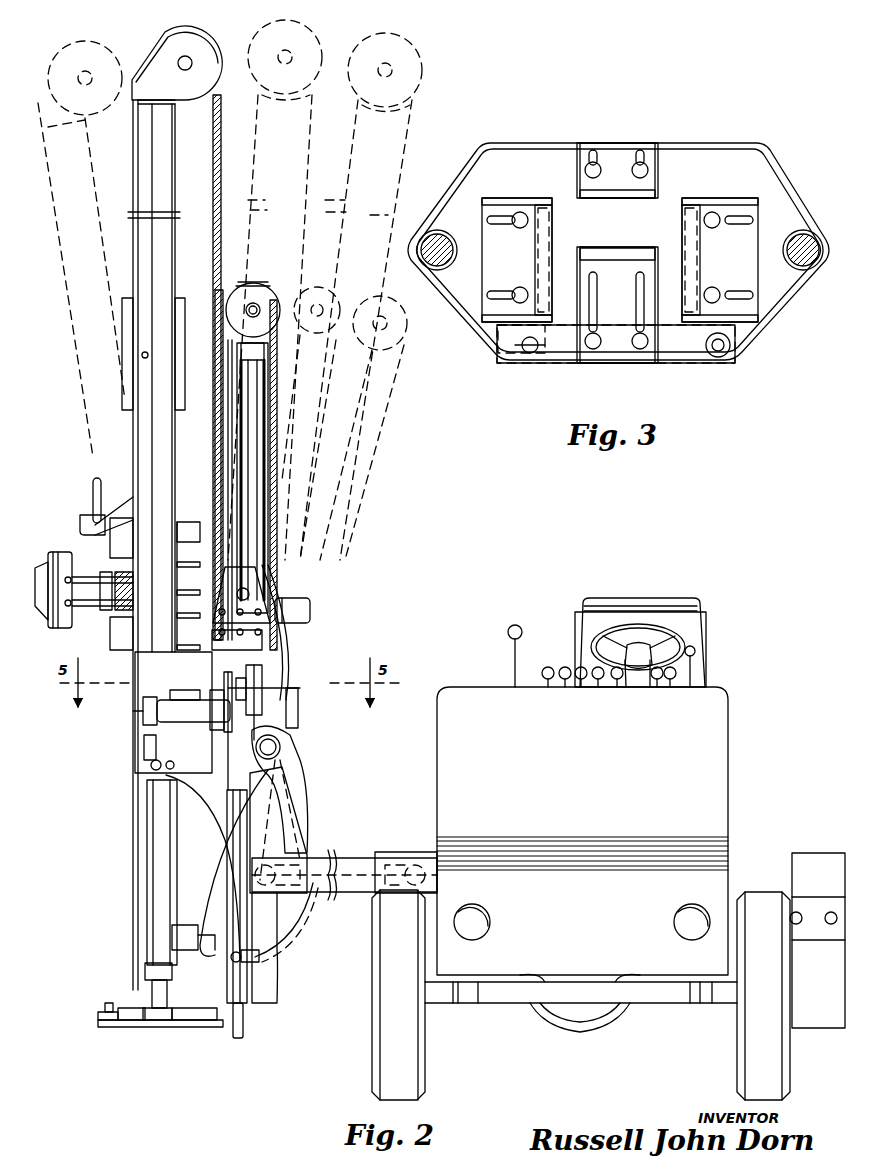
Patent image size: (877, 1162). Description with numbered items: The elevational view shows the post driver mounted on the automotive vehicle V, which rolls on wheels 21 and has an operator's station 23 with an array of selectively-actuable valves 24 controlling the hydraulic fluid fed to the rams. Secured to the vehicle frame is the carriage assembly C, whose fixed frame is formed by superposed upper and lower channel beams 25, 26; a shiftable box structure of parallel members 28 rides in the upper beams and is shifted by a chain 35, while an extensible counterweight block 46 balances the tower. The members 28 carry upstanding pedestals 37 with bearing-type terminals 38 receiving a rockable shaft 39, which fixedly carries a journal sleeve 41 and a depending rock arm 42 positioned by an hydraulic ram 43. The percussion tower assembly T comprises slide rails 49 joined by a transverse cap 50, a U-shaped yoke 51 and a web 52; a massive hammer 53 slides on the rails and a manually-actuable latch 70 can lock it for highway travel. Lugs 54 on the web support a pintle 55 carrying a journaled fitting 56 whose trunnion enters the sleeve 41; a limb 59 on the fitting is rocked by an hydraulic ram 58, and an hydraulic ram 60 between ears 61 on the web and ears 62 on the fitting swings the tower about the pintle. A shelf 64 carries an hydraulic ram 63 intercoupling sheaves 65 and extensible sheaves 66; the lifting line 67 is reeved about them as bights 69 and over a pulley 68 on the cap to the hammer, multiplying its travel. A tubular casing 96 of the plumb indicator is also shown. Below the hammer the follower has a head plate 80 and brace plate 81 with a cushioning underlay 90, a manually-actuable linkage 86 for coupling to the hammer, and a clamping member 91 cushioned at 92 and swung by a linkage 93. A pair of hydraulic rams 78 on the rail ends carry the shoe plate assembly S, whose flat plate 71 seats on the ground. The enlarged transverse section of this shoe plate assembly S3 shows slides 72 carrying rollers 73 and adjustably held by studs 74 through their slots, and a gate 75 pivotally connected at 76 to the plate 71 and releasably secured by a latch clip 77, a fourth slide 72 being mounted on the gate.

In FIG. 2, the percussion tower assembly T is at (130, 270).
In FIG. 2, the slide rails 49 is at (162, 263).
In FIG. 2, the pulley 68 is at (205, 52).
In FIG. 2, the transverse cap 50 is at (140, 92).
In FIG. 2, the hammer lifting line 67 is at (218, 168).
In FIG. 2, the hammer 53 is at (122, 360).
In FIG. 2, the latch 70 is at (143, 358).
In FIG. 2, the bights 69 is at (278, 392).
In FIG. 2, the sheaves 66 is at (270, 305).
In FIG. 2, the hydraulic ram 63 is at (258, 462).
In FIG. 2, the sheaves 65 is at (241, 595).
In FIG. 2, the tubular casing 96 is at (295, 605).
In FIG. 2, the manually-actuable linkage 86 is at (86, 512).
In FIG. 2, the head plate 80 is at (118, 537).
In FIG. 2, the brace plate 81 is at (118, 652).
In FIG. 2, the clamping member 91 is at (64, 555).
In FIG. 2, the cushion 92 is at (50, 628).
In FIG. 2, the linkage 93 is at (95, 608).
In FIG. 2, the cushioning underlay 90 is at (188, 548).
In FIG. 2, the web 52 is at (173, 712).
In FIG. 2, the ears 61 is at (140, 705).
In FIG. 2, the hydraulic ram 60 is at (197, 712).
In FIG. 2, the ears 62 is at (222, 690).
In FIG. 2, the shelf 64 is at (232, 638).
In FIG. 2, the lugs 54 is at (172, 755).
In FIG. 2, the pintle 55 is at (246, 679).
In FIG. 2, the fitting 56 is at (261, 702).
In FIG. 2, the limb 59 is at (262, 700).
In FIG. 2, the journal sleeve 41 is at (300, 690).
In FIG. 2, the bearing-type terminals 38 is at (290, 735).
In FIG. 2, the shaft 39 is at (280, 748).
In FIG. 2, the pedestals 37 is at (278, 881).
In FIG. 2, the hydraulic rams 78 is at (150, 848).
In FIG. 3, the hydraulic rams 78 is at (788, 250).
In FIG. 2, the plate 71 is at (192, 1028).
In FIG. 3, the plate 71 is at (618, 269).
In FIG. 2, the pivotal connection 76 is at (105, 1005).
In FIG. 3, the pivotal connection 76 is at (726, 352).
In FIG. 2, the shoe plate assembly S is at (128, 1028).
In FIG. 2, the rock arm 42 is at (250, 914).
In FIG. 2, the U-shaped yoke 51 is at (203, 867).
In FIG. 2, the hydraulic ram 58 is at (232, 962).
In FIG. 2, the members 28 is at (312, 860).
In FIG. 2, the chain 35 is at (330, 895).
In FIG. 2, the hydraulic ram 43 is at (350, 865).
In FIG. 2, the carriage assembly C is at (405, 848).
In FIG. 2, the upper channel beams 25 is at (340, 912).
In FIG. 2, the counterweight block 46 is at (814, 973).
In FIG. 2, the lower channel beams 26 is at (445, 910).
In FIG. 2, the valves 24 is at (568, 694).
In FIG. 2, the operator's station 23 is at (572, 625).
In FIG. 2, the automotive vehicle V is at (545, 1028).
In FIG. 2, the wheels 21 is at (581, 995).
In FIG. 3, the shoe housing S3 is at (618, 251).
In FIG. 3, the slides 72 is at (620, 253).
In FIG. 3, the rollers 73 is at (622, 195).
In FIG. 3, the studs 74 is at (585, 172).
In FIG. 3, the gate 75 is at (565, 358).
In FIG. 3, the latch clip 77 is at (500, 338).